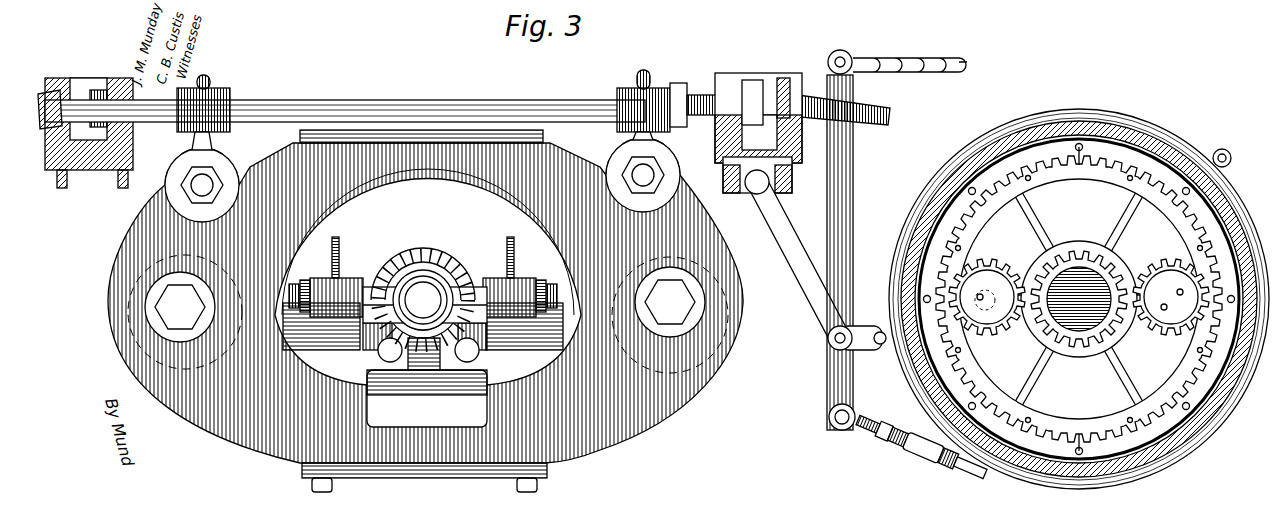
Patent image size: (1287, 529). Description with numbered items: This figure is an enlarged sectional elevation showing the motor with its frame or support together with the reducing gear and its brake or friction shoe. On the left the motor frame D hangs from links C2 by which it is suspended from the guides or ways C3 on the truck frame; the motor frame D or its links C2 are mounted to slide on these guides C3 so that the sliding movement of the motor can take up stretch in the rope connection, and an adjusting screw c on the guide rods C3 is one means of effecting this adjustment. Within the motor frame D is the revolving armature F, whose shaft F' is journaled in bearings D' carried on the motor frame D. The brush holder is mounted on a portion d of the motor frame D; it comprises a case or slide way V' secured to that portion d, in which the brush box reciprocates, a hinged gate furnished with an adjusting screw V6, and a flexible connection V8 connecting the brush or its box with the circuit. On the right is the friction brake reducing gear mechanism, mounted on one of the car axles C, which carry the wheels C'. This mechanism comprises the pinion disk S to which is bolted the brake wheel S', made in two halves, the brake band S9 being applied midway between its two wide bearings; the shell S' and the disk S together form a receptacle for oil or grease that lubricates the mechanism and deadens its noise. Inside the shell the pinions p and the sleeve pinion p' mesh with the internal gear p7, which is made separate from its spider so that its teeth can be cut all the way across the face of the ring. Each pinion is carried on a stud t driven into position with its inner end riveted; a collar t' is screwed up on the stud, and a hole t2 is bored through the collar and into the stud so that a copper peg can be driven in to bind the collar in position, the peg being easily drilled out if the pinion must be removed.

The motor frame D is at (425, 311).
The guides or ways C3 is at (428, 100).
The links C2 is at (205, 122).
The wheels C' is at (780, 87).
The adjusting screw c is at (700, 90).
The bearings D' is at (434, 260).
The revolving armature F is at (423, 263).
The shaft F' is at (429, 264).
The hub f'' is at (423, 256).
The case or slide way V' is at (429, 279).
The adjusting screw V6 is at (288, 283).
The flexible connection V8 is at (342, 228).
The portion of the motor frame d is at (423, 326).
The brake wheel S' is at (1079, 314).
The brake band S9 is at (1128, 104).
The internal gear p7 is at (1160, 420).
The sleeve pinion p' is at (1079, 299).
The pinions p is at (1079, 299).
The pinion disk S is at (1166, 339).
The car axles C is at (1079, 326).
The hole t2 is at (1079, 297).
The collar t' is at (1079, 308).
The stud t is at (1080, 302).